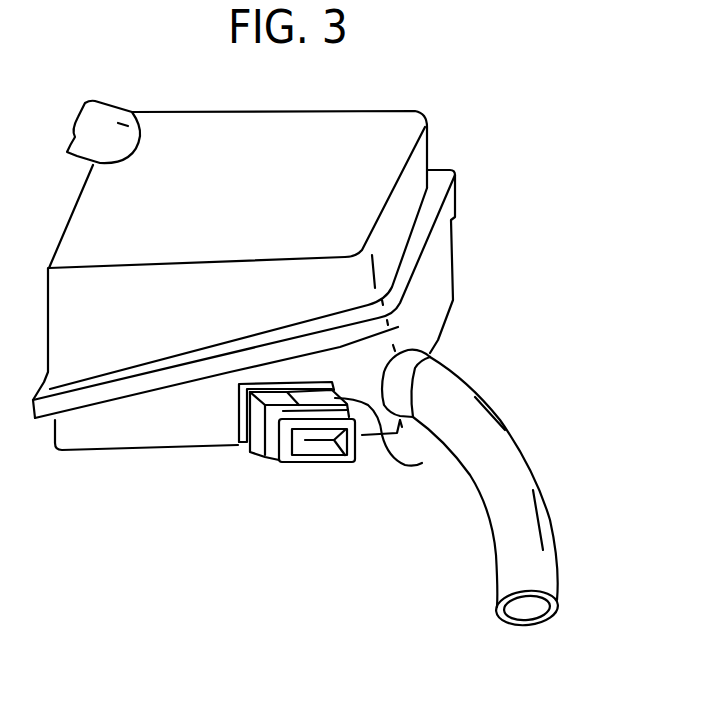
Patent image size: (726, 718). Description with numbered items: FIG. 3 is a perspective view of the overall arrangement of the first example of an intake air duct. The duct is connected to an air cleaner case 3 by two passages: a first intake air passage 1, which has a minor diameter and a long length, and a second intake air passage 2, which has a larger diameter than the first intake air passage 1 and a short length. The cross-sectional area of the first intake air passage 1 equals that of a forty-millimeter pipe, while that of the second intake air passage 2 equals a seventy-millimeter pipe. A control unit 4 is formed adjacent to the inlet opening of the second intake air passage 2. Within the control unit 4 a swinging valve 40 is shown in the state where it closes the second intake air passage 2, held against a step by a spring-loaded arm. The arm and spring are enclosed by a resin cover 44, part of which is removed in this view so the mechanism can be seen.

The first intake air passage 1 is at (518, 465).
The second intake air passage 2 is at (332, 440).
The air cleaner case 3 is at (417, 163).
The control unit 4 is at (390, 439).
The valve 40 is at (305, 440).
The cover 44 is at (258, 433).